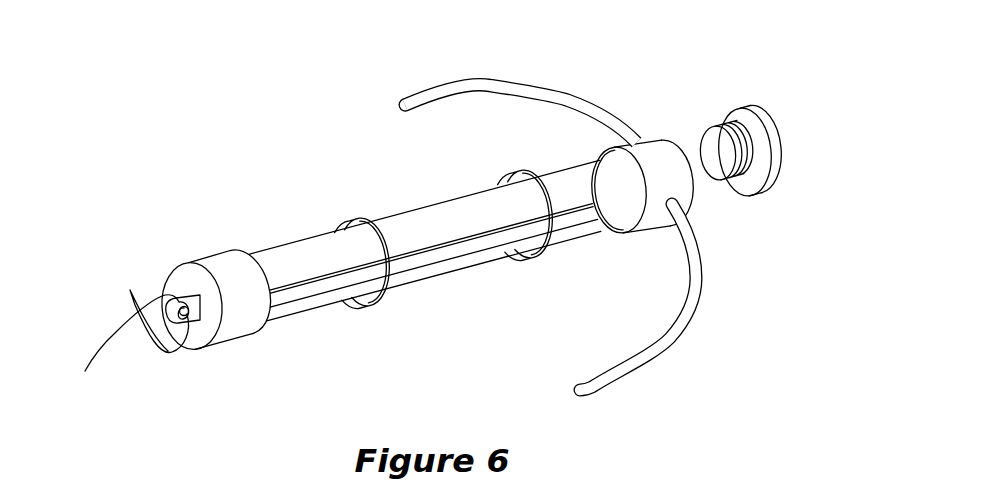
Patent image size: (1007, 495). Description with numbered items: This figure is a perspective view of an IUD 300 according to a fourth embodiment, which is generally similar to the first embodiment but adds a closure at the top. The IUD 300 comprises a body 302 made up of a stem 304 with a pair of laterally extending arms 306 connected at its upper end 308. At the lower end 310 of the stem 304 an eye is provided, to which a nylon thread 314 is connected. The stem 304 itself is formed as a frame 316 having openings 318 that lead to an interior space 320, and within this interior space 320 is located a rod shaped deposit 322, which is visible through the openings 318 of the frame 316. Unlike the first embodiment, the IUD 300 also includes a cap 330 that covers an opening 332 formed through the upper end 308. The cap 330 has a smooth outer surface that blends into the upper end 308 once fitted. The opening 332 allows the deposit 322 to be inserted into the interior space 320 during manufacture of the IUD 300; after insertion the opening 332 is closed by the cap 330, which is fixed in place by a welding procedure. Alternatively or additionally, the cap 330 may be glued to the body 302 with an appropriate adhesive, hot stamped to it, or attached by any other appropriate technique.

The IUD 300 is at (361, 104).
The body 302 is at (624, 140).
The stem 304 is at (415, 262).
The arms 306 is at (673, 330).
The upper end 308 is at (645, 157).
The lower end 310 is at (230, 344).
The nylon thread 314 is at (99, 347).
The frame 316 is at (344, 220).
The openings 318 is at (480, 266).
The interior space 320 is at (317, 308).
The deposit 322 is at (268, 248).
The cap 330 is at (754, 110).
The opening 332 is at (693, 200).